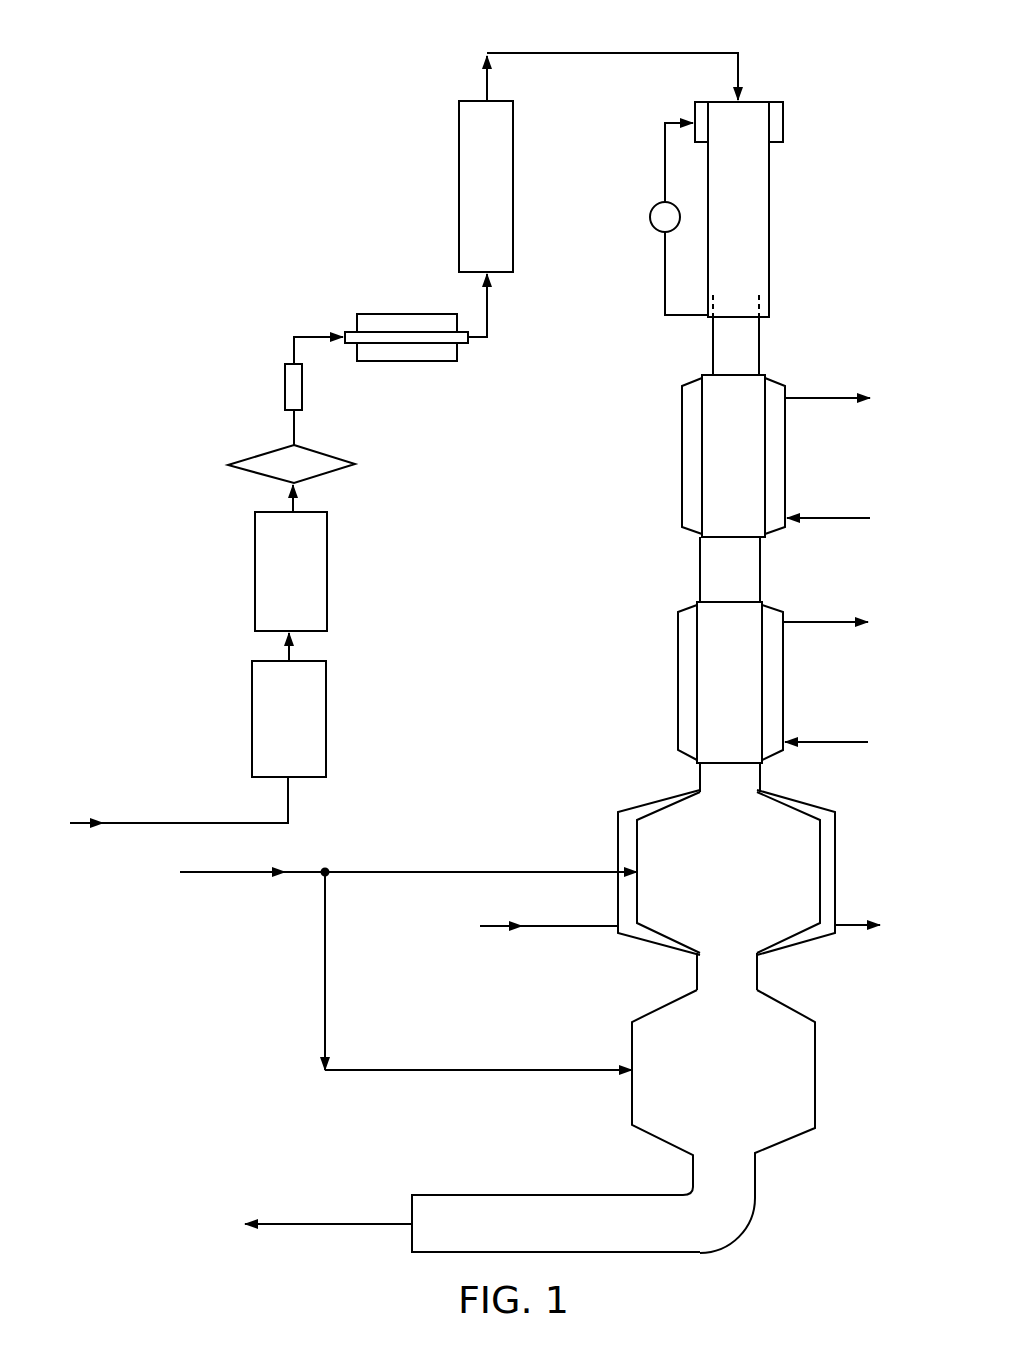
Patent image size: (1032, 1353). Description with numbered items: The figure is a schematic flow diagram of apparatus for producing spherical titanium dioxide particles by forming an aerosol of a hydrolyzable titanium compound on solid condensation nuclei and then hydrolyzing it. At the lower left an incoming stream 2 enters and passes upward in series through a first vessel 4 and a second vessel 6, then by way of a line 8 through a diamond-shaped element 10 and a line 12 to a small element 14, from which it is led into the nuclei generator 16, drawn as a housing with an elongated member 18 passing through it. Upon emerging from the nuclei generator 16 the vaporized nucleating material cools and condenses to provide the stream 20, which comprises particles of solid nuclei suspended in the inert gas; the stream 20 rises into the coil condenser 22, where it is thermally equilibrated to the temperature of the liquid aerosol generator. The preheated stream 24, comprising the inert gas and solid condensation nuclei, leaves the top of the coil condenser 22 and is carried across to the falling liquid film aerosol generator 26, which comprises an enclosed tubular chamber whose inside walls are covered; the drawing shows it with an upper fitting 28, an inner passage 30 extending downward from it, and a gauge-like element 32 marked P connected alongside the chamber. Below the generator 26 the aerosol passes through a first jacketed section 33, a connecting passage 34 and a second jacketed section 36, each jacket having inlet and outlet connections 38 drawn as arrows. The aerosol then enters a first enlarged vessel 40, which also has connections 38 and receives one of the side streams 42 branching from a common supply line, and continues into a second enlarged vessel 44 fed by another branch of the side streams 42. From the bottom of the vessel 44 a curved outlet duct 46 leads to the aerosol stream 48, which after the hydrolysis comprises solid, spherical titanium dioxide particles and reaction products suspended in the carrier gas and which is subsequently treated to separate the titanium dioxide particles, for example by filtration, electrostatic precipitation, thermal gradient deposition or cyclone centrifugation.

The feed line 2 is at (178, 822).
The first vessel 4 is at (328, 712).
The second vessel 6 is at (328, 578).
The transfer line 8 is at (286, 494).
The valve 10 is at (332, 473).
The line 12 is at (290, 433).
The pump 14 is at (284, 388).
The nuclei generator 16 is at (388, 362).
The heat exchanger tube 18 is at (428, 345).
The stream 20 is at (489, 318).
The coil condenser 22 is at (514, 148).
The preheated stream 24 is at (606, 53).
The falling liquid film aerosol generator 26 is at (770, 233).
The flange 28 is at (784, 128).
The tube 30 is at (764, 305).
The pressure gauge 32 is at (652, 228).
The first heated section 33 is at (788, 460).
The conduit 34 is at (765, 563).
The second heated section 36 is at (786, 658).
The heating fluid lines 38 is at (816, 397).
The first reactor 40 is at (836, 892).
The feed lines 42 is at (234, 874).
The second reactor 44 is at (818, 1080).
The outlet pipe 46 is at (586, 1194).
The aerosol stream 48 is at (356, 1228).